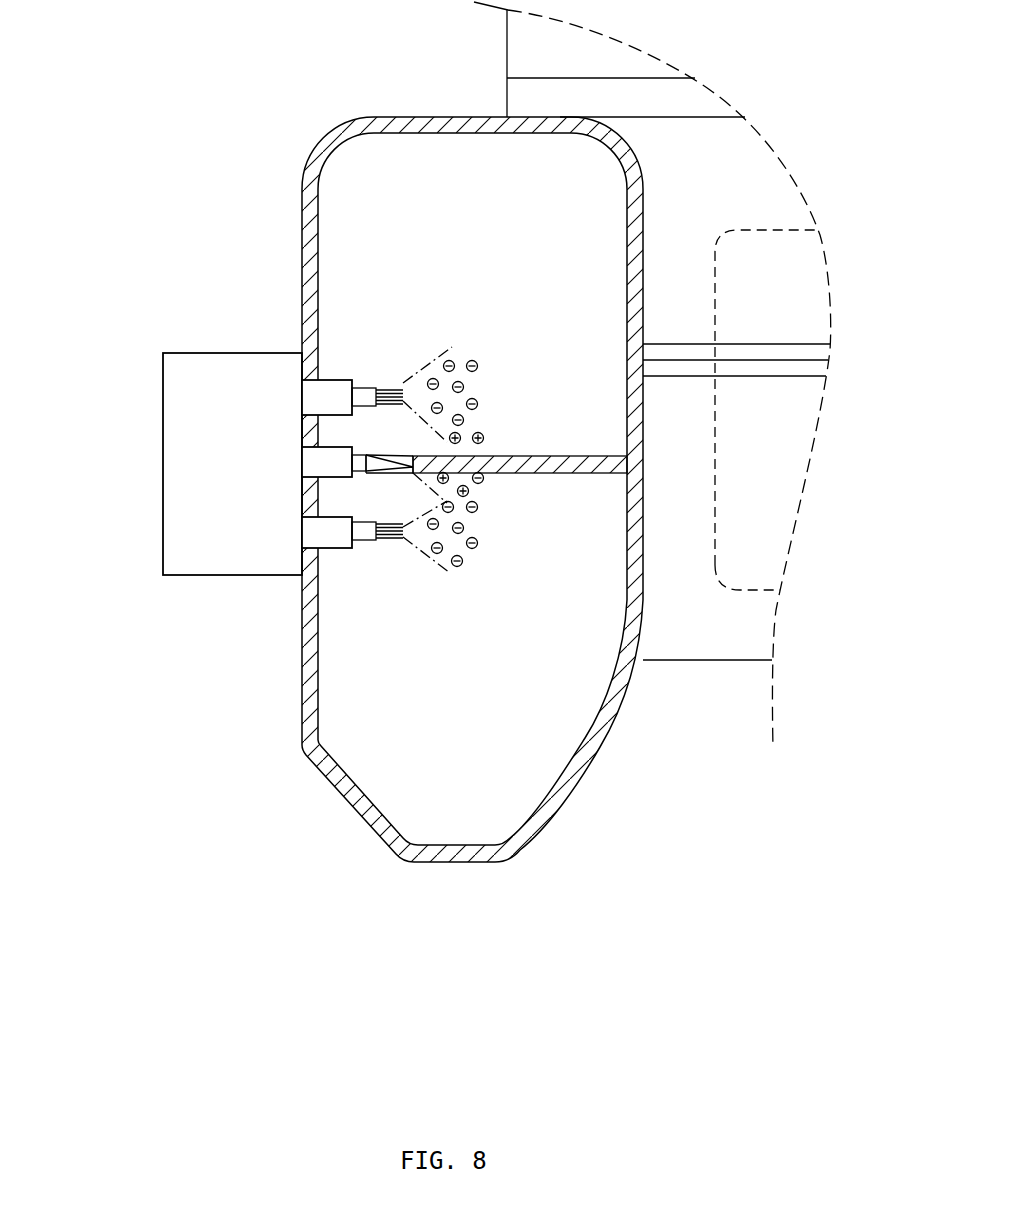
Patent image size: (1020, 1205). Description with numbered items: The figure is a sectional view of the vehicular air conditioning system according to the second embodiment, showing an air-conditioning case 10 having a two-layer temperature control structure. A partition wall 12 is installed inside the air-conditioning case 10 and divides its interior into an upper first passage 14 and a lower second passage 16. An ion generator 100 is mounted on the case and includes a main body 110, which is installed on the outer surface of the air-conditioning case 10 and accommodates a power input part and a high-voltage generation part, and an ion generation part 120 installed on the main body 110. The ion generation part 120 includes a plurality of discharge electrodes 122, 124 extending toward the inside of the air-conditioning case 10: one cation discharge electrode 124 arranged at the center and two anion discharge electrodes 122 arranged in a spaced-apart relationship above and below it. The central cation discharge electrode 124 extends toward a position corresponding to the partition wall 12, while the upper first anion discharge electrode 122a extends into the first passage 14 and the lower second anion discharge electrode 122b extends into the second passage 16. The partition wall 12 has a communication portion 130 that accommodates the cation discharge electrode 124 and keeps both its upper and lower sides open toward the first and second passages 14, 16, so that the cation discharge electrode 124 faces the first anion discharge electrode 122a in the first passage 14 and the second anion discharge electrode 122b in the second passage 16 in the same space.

The air-conditioning case 10 is at (513, 845).
The partition wall 12 is at (588, 473).
The first passage 14 is at (430, 255).
The second passage 16 is at (495, 707).
The ion generator 100 is at (236, 567).
The main body 110 is at (172, 408).
The ion generation part 120 is at (229, 575).
The anion discharge electrode 122 is at (236, 575).
The first anion discharge electrode 122a is at (363, 398).
The second anion discharge electrode 122b is at (368, 535).
The cation discharge electrode 124 is at (375, 467).
The communication portion 130 is at (402, 475).